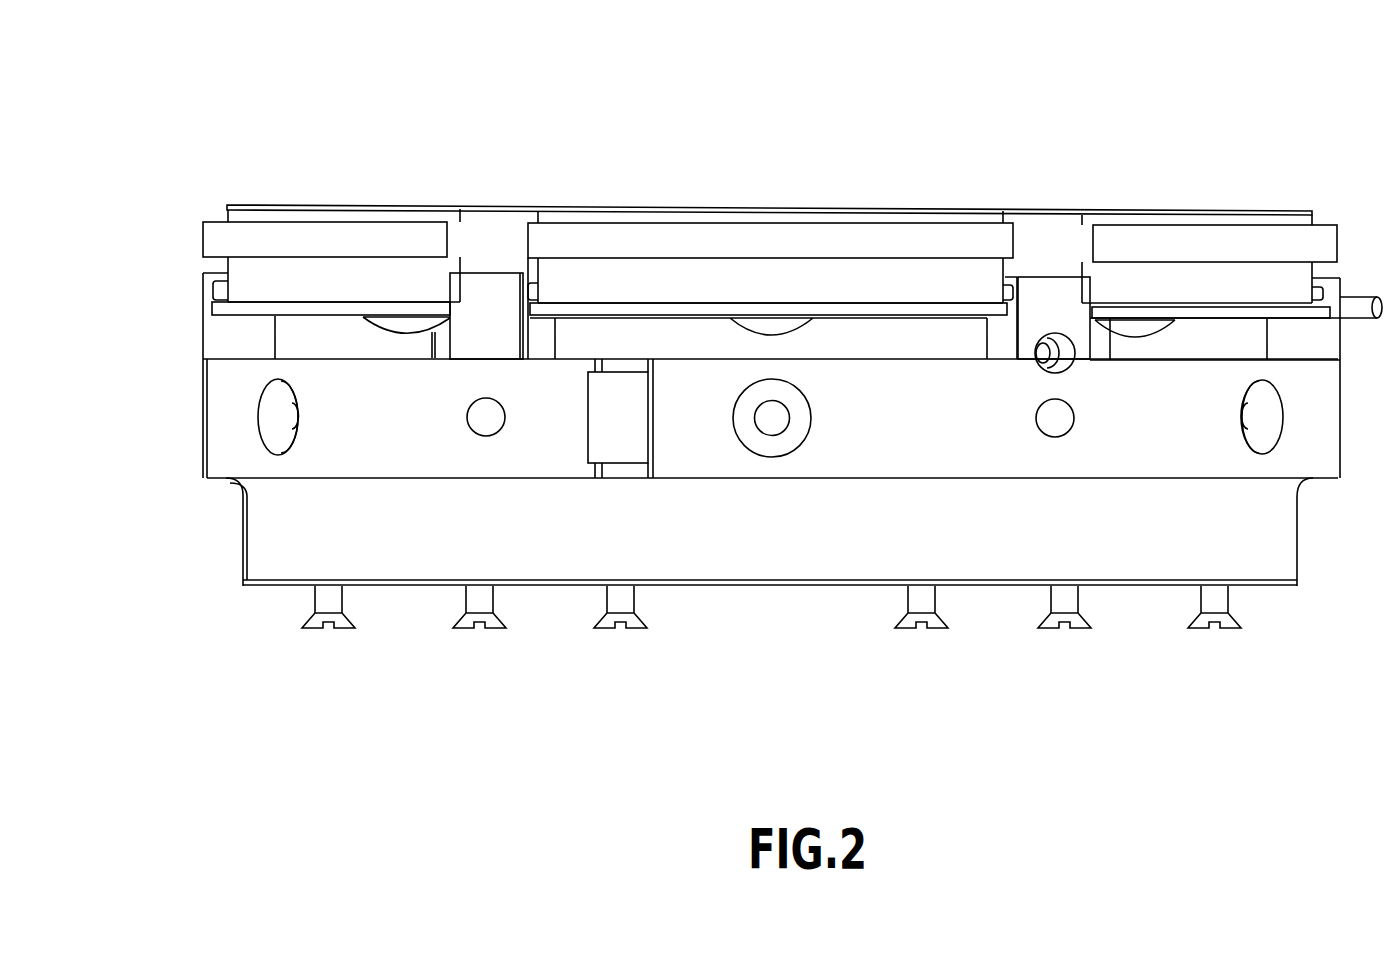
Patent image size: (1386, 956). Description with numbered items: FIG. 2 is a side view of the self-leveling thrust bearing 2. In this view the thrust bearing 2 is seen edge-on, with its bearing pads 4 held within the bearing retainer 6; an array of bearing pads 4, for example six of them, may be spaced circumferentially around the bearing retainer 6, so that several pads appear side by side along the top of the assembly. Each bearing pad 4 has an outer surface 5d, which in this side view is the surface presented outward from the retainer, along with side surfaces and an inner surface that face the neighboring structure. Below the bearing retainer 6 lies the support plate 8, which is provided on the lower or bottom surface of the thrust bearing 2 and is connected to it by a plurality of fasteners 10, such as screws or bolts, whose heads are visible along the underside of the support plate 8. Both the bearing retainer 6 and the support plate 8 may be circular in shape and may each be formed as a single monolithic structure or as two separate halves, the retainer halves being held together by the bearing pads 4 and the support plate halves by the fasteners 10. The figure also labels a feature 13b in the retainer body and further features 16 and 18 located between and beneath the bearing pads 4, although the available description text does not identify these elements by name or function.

The self-leveling thrust bearing 2 is at (1170, 100).
The bearing pad 4 is at (815, 210).
The outer surface 5d is at (938, 245).
The bearing retainer 6 is at (540, 384).
The support plate 8 is at (262, 586).
The fastener 10 is at (1048, 623).
The countersunk hole 13b is at (218, 413).
The pillar block 16 is at (1056, 286).
The support block 18 is at (1200, 359).